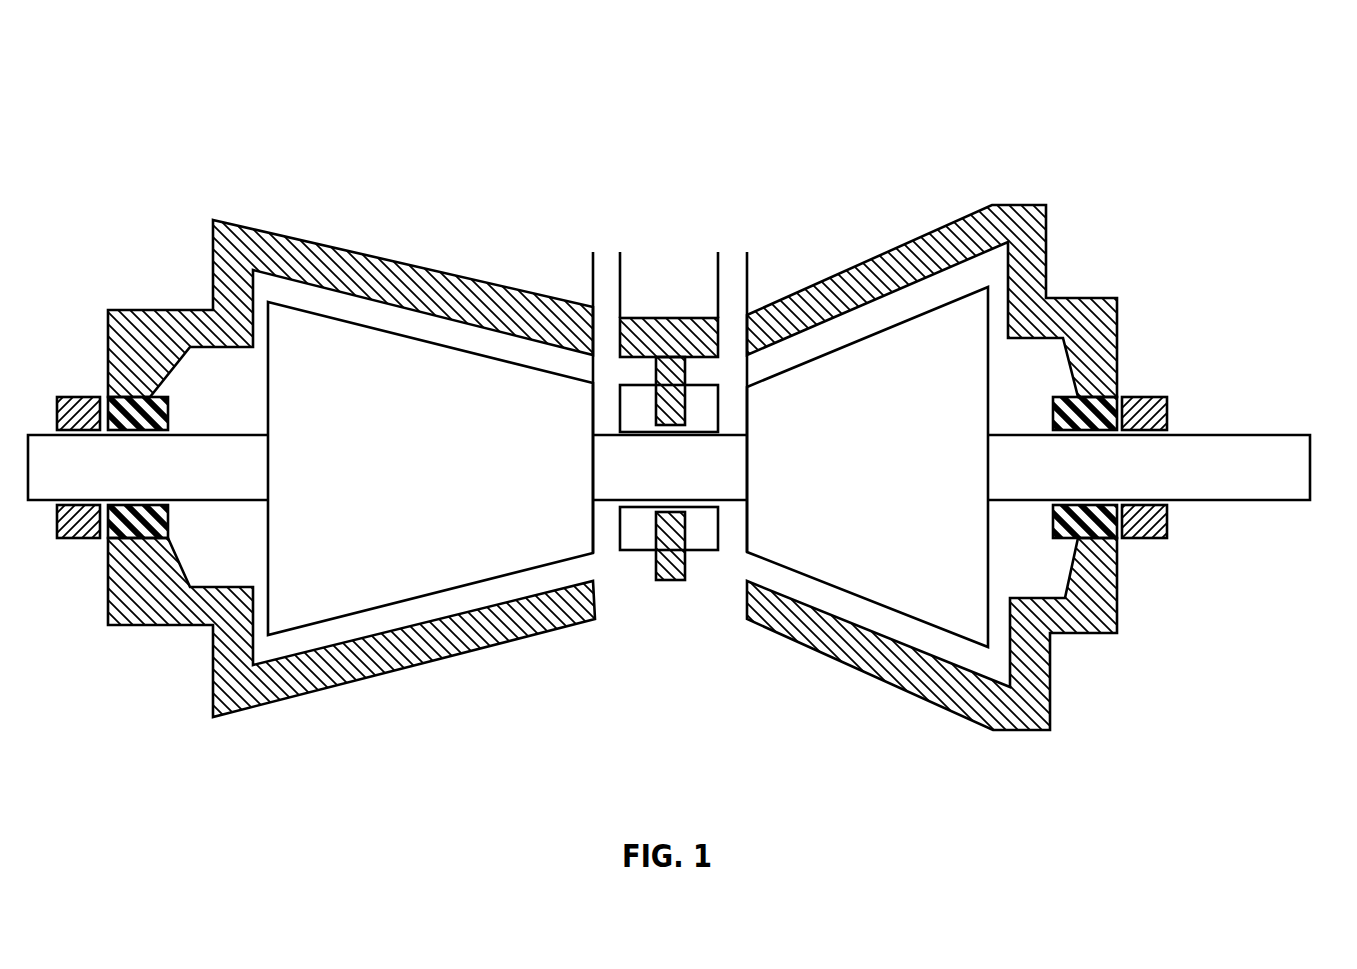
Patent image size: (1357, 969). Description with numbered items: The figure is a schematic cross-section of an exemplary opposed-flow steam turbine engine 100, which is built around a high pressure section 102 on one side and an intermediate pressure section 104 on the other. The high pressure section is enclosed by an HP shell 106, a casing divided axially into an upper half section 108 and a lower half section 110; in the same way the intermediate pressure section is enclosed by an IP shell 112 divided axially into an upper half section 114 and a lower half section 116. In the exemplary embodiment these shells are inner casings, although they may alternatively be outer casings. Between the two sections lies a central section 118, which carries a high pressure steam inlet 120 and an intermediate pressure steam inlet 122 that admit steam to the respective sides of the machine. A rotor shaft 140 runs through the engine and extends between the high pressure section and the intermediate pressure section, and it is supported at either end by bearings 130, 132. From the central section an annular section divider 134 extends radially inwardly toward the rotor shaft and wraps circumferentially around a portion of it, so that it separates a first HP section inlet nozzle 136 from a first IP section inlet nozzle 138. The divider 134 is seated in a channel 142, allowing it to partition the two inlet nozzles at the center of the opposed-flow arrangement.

The opposed-flow steam turbine engine 100 is at (178, 74).
The high pressure (HP) section 102 is at (430, 409).
The intermediate pressure (IP) section 104 is at (867, 404).
The HP shell 106 is at (321, 452).
The upper half section 108 is at (252, 228).
The lower half section 110 is at (318, 692).
The IP shell 112 is at (957, 414).
The upper half section 114 is at (1021, 205).
The lower half section 116 is at (900, 688).
The central section 118 is at (671, 380).
The high pressure steam inlet 120 is at (593, 268).
The intermediate pressure steam inlet 122 is at (748, 268).
The first bearing 130 is at (170, 519).
The second bearing 132 is at (1118, 634).
The annular section divider 134 is at (687, 574).
The first HP section inlet nozzle 136 is at (578, 396).
The first IP section inlet nozzle 138 is at (785, 396).
The rotor shaft 140 is at (1233, 410).
The channel 142 is at (661, 512).